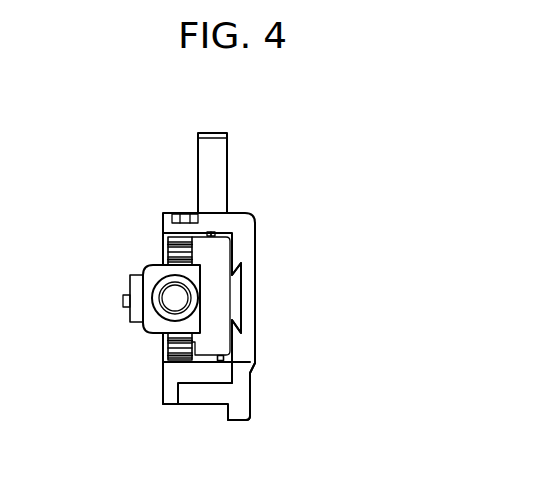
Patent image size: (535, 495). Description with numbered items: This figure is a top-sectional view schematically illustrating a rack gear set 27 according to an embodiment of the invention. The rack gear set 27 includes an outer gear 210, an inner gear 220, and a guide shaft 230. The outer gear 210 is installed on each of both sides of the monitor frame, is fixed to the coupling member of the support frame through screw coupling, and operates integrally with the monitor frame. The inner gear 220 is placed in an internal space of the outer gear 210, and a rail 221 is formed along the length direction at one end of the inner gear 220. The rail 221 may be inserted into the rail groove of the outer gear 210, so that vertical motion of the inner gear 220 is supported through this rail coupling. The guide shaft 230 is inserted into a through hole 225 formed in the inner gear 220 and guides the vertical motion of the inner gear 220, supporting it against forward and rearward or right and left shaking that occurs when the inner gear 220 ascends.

The rack gear set 27 is at (327, 185).
The outer gear 210 is at (245, 353).
The inner gear 220 is at (213, 287).
The rail 221 is at (233, 320).
The through hole 225 is at (163, 323).
The guide shaft 230 is at (172, 290).